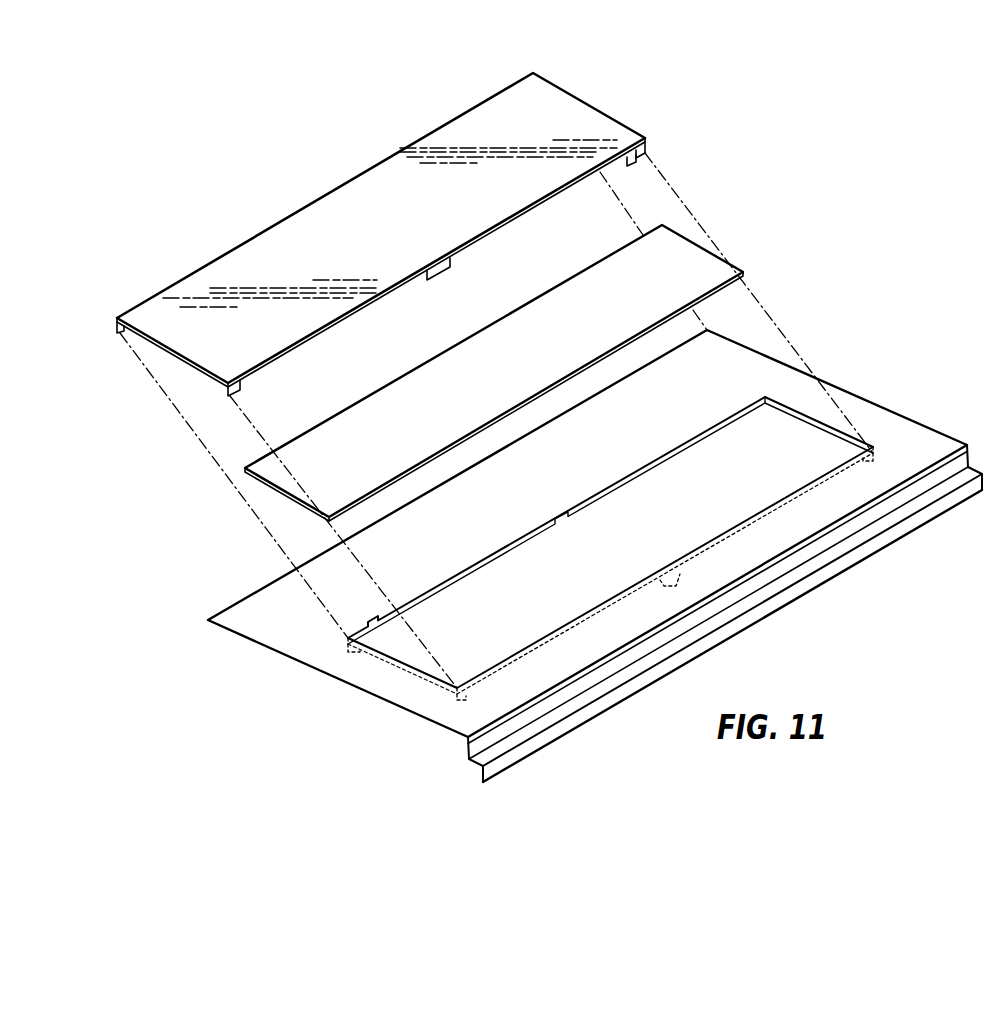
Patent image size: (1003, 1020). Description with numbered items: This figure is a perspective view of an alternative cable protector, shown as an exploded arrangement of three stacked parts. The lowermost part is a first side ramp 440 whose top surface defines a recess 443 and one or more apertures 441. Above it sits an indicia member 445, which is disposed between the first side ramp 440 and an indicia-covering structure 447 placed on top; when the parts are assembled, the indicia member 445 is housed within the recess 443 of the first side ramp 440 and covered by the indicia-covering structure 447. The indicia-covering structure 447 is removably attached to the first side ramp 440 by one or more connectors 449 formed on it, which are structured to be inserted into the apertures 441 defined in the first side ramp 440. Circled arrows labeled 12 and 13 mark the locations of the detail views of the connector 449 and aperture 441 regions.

The first side ramp 440 is at (320, 720).
The apertures 441 is at (773, 396).
The recess 443 is at (823, 448).
The indicia member 445 is at (513, 381).
The indicia-covering structure 447 is at (399, 240).
The connectors 449 is at (636, 157).
The section line 12 is at (286, 385).
The section line 13 is at (623, 525).